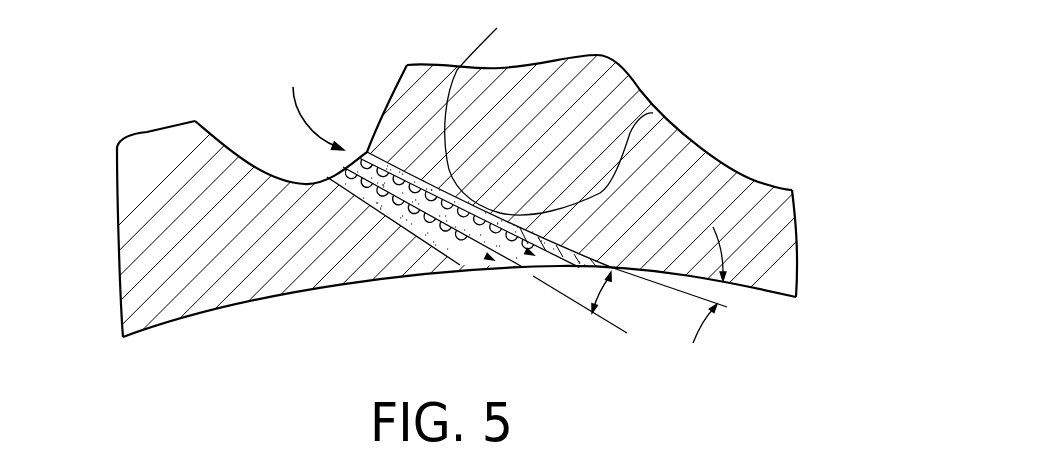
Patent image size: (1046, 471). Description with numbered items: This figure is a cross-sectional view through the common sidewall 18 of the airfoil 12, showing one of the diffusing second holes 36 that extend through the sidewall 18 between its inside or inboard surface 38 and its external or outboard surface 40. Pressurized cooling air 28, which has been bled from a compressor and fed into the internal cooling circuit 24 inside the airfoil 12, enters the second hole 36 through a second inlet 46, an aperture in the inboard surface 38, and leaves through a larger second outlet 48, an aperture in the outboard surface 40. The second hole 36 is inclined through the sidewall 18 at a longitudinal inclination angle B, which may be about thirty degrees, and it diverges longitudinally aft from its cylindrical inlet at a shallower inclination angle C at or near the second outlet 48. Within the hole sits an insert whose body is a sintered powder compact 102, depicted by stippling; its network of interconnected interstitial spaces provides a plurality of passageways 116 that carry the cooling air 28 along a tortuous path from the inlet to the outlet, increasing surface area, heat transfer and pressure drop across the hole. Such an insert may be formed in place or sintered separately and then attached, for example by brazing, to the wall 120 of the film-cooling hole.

The airfoil 12 is at (613, 67).
The common sidewall 18 is at (140, 243).
The internal cooling circuit 24 is at (316, 170).
The cooling air 28 is at (293, 110).
The second hole 36 is at (406, 235).
The inboard surface 38 is at (216, 156).
The outboard surface 40 is at (273, 295).
The second inlet 46 is at (365, 157).
The second outlet 48 is at (478, 248).
The sintered powder compact 102 is at (518, 270).
The passageway 116 is at (653, 113).
The wall of the film-cooling hole 120 is at (522, 113).
The inclination angle B is at (614, 294).
The inclination angle C is at (693, 343).